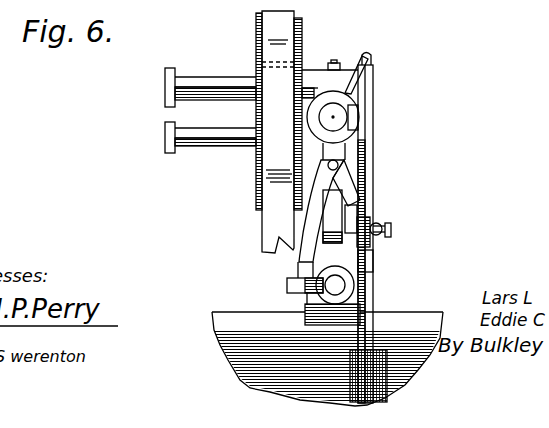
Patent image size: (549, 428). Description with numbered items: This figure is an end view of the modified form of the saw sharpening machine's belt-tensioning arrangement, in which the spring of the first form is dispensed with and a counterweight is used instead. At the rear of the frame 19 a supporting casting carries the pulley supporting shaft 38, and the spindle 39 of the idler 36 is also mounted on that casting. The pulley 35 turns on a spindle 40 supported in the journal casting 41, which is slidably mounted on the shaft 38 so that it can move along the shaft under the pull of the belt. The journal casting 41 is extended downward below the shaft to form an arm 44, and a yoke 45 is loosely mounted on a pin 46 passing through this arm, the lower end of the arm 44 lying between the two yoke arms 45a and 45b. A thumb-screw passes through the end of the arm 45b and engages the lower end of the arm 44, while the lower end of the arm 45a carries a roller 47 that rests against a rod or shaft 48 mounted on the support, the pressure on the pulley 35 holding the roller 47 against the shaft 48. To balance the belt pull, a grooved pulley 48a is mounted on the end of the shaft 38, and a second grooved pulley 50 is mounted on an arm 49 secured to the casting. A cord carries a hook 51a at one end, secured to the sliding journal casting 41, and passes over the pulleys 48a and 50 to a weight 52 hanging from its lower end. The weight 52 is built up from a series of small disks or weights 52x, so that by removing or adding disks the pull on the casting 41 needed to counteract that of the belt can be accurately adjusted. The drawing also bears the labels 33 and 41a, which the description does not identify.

The frame 19 is at (405, 322).
The drum flange 33 is at (278, 143).
The pulley 35 is at (258, 32).
The idler 36 is at (260, 193).
The pulley supporting shaft 38 is at (335, 118).
The spindle 39 is at (222, 143).
The spindle 40 is at (215, 82).
The journal casting 41 is at (345, 98).
The housing plate 41a is at (313, 72).
The arm 44 is at (347, 181).
The yoke 45 is at (347, 158).
The arm of yoke 45a is at (302, 255).
The arm of yoke 45b is at (345, 218).
The pin 46 is at (338, 165).
The roller 47 is at (288, 282).
The rod or shaft 48 is at (333, 287).
The grooved pulley 48a is at (375, 130).
The arm 49 is at (358, 207).
The second grooved pulley 50 is at (368, 261).
The hook 51a is at (371, 57).
The weight 52 is at (350, 375).
The small disks or weights 52x is at (384, 358).